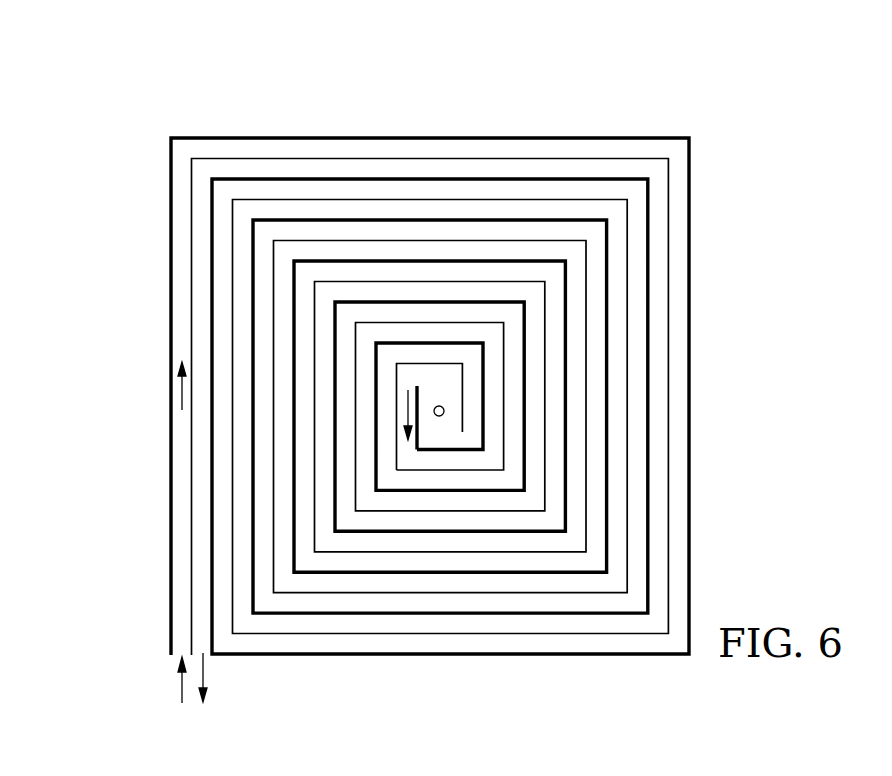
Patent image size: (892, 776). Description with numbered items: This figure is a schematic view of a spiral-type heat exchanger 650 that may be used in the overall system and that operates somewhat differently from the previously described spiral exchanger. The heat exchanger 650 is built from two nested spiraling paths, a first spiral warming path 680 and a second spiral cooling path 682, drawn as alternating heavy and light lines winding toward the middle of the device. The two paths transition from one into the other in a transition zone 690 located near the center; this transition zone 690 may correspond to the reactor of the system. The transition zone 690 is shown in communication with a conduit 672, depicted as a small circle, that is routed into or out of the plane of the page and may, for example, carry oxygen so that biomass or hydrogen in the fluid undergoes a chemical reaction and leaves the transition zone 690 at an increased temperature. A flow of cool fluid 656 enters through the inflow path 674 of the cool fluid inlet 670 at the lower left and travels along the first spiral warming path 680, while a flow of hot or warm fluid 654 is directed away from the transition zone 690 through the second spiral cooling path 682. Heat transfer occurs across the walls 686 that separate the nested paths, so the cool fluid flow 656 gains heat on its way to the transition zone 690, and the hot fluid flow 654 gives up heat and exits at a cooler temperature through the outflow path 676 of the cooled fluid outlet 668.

The heat exchanger 650 is at (601, 106).
The flow of hot or warm fluid 654 is at (408, 407).
The flow of cool fluid 656 is at (182, 398).
The cooled fluid outlet 668 is at (212, 657).
The cool fluid inlet 670 is at (175, 659).
The conduit 672 is at (444, 411).
The inflow path 674 is at (182, 680).
The outflow path 676 is at (203, 673).
The first spiral warming path 680 is at (181, 208).
The second spiral cooling path 682 is at (227, 167).
The walls 686 is at (190, 541).
The transition zone 690 is at (447, 375).